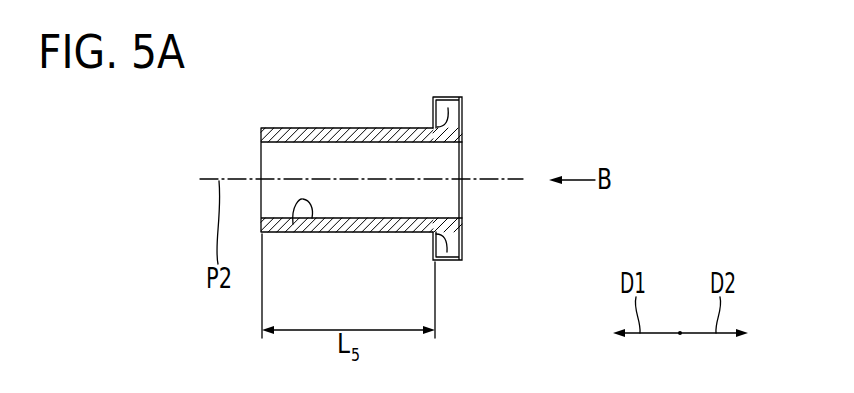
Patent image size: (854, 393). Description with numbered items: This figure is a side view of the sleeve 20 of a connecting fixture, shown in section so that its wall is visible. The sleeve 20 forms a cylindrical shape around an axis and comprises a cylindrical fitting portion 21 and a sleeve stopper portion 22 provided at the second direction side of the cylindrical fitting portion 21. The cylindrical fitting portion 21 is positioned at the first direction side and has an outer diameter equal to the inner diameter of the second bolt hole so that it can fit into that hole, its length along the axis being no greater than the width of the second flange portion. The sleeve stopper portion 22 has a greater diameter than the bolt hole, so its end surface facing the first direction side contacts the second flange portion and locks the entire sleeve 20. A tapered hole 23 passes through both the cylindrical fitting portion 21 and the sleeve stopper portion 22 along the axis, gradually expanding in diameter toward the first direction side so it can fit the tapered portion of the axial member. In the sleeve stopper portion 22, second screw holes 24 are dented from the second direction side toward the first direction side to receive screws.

The sleeve 20 is at (484, 67).
The cylindrical fitting portion 21 is at (358, 232).
The sleeve stopper portion 22 is at (458, 136).
The tapered hole 23 is at (293, 224).
The second screw hole 24 is at (437, 127).